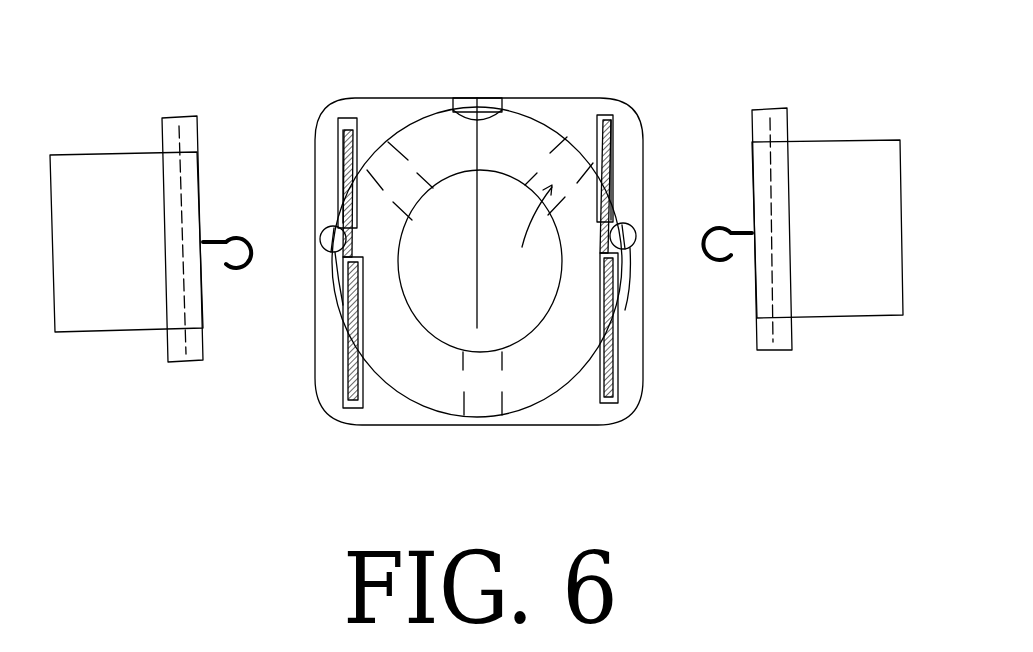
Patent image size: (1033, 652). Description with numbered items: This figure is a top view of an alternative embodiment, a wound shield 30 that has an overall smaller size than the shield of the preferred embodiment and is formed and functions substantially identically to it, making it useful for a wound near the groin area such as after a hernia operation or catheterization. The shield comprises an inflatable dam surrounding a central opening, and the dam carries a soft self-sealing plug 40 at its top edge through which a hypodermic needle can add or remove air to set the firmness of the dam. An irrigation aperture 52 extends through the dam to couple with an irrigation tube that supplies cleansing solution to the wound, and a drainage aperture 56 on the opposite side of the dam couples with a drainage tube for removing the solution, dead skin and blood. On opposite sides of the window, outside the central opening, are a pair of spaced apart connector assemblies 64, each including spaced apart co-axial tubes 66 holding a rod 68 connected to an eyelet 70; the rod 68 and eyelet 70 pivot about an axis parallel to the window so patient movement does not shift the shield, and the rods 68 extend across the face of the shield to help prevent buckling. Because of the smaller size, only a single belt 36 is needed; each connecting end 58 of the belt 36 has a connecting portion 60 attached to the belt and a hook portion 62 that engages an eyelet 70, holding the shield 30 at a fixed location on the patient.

The wound shield 30 is at (411, 62).
The belt 36 is at (114, 243).
The self-sealing plug 40 is at (483, 105).
The irrigation aperture 52 is at (412, 200).
The drainage aperture 56 is at (482, 372).
The connecting end 58 is at (482, 207).
The connecting portion 60 is at (168, 138).
The hook portion 62 is at (244, 208).
The connector assembly 64 is at (348, 108).
The co-axial tubes 66 is at (338, 122).
The rod 68 is at (340, 147).
The eyelet 70 is at (334, 228).